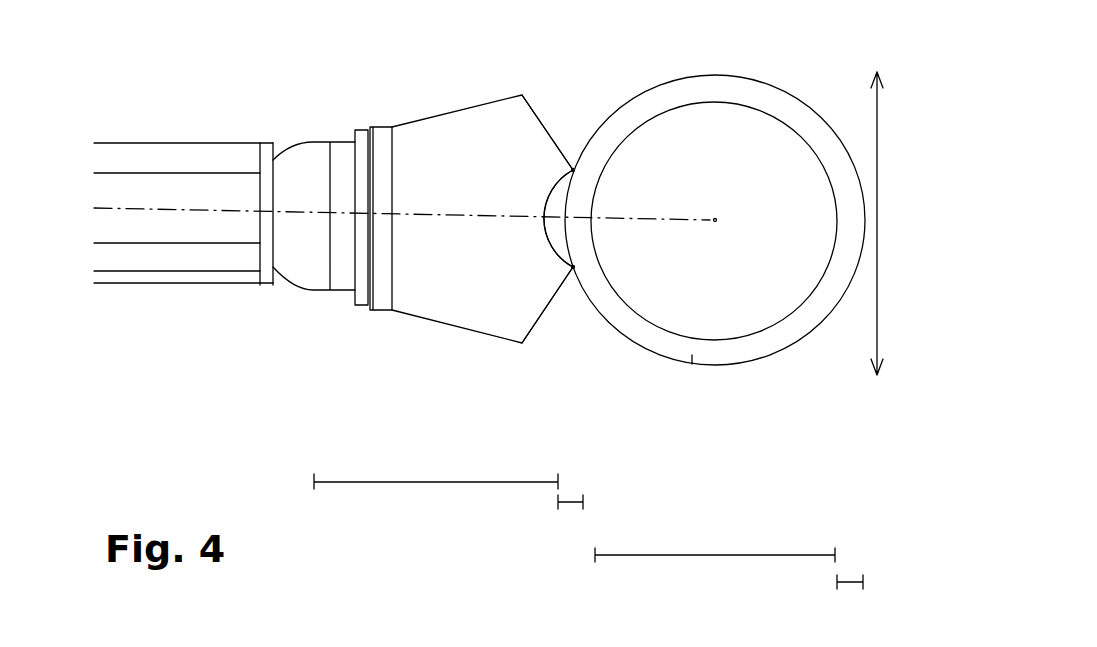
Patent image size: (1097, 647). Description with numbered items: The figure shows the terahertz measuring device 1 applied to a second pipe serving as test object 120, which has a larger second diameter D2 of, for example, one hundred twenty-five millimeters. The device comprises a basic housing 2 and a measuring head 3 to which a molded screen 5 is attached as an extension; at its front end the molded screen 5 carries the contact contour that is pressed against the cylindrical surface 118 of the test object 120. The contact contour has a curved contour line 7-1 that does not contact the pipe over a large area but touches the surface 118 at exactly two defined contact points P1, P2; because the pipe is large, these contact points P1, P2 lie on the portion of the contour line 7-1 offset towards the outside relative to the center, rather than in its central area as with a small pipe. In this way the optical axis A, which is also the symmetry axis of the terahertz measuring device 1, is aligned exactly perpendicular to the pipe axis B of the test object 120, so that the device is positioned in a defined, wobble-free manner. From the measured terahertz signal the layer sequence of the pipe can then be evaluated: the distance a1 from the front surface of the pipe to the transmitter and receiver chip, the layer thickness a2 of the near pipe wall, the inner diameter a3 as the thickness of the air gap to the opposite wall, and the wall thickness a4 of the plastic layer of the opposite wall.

The terahertz measuring device 1 is at (112, 142).
The basic housing 2 is at (178, 145).
The measuring head 3 is at (297, 288).
The molded screen 5 is at (450, 113).
The contour line 7-1 is at (537, 114).
The optical axis A is at (202, 210).
The pipe axis B is at (710, 220).
The contact point P1 is at (573, 168).
The contact point P2 is at (575, 270).
The surface 118 is at (682, 77).
The test object 120 is at (737, 362).
The second diameter D2 is at (896, 223).
The distance a1 is at (436, 506).
The layer thickness a2 is at (569, 520).
The inner diameter of the pipe a3 is at (715, 578).
The wall thickness a4 is at (848, 605).